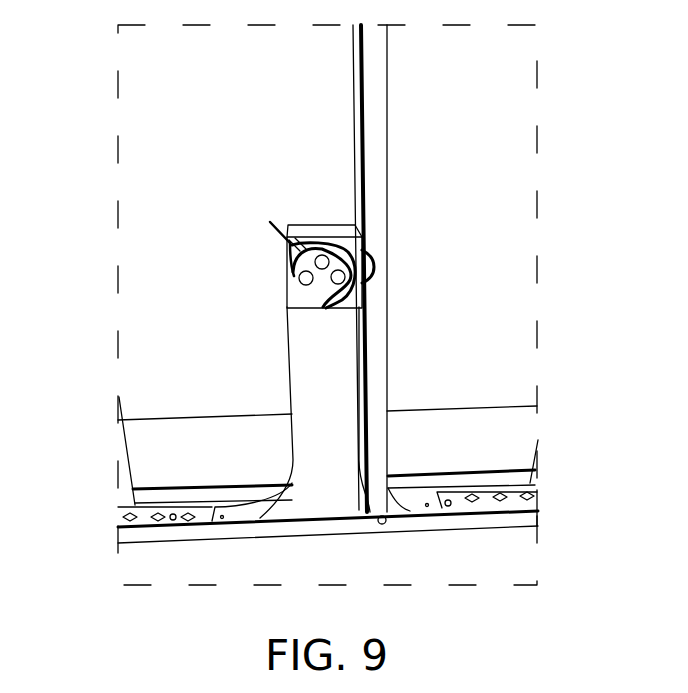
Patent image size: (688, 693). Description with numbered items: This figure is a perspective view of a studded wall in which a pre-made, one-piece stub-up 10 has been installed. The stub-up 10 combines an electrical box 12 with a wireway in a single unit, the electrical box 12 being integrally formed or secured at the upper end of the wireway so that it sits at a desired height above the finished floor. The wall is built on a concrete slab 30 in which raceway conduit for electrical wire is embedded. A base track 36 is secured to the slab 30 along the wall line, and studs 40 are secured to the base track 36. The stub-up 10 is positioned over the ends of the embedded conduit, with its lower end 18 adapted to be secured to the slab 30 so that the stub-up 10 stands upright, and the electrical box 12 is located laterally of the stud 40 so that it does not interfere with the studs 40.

The stub-up 10 is at (328, 350).
The electrical box 12 is at (290, 275).
The lower end 18 is at (275, 498).
The concrete slab 30 is at (518, 562).
The base track 36 is at (518, 493).
The stud 40 is at (373, 95).